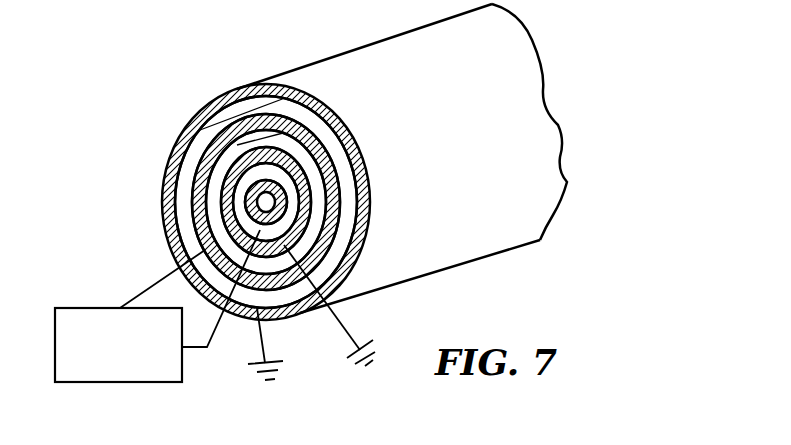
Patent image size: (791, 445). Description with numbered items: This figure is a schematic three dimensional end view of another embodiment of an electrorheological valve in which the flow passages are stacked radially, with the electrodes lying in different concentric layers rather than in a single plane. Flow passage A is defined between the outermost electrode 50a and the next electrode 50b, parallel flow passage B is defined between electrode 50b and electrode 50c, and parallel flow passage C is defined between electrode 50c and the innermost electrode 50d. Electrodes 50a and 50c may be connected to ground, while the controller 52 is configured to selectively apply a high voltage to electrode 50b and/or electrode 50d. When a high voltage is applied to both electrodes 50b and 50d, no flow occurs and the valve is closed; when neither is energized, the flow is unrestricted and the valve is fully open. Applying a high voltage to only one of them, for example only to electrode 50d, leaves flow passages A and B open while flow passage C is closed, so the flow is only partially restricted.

The electrode 50a is at (175, 247).
The electrode 50b is at (243, 148).
The electrode 50c is at (310, 204).
The electrode 50d is at (310, 163).
The flow passage A is at (188, 163).
The flow passage B is at (235, 145).
The flow passage C is at (238, 213).
The controller 52 is at (127, 373).